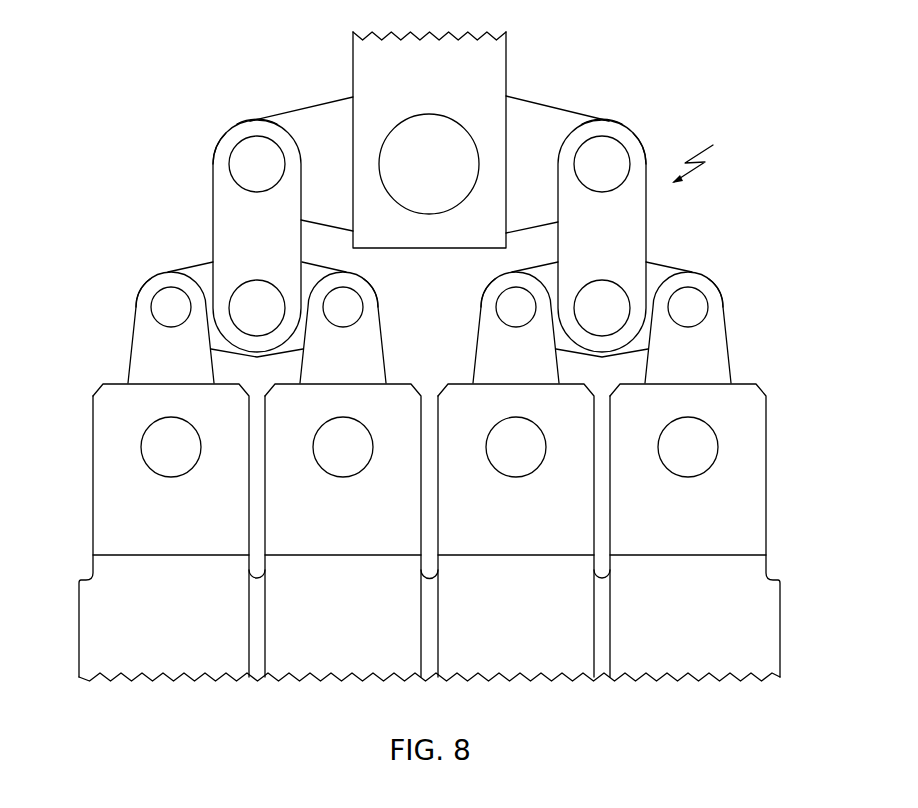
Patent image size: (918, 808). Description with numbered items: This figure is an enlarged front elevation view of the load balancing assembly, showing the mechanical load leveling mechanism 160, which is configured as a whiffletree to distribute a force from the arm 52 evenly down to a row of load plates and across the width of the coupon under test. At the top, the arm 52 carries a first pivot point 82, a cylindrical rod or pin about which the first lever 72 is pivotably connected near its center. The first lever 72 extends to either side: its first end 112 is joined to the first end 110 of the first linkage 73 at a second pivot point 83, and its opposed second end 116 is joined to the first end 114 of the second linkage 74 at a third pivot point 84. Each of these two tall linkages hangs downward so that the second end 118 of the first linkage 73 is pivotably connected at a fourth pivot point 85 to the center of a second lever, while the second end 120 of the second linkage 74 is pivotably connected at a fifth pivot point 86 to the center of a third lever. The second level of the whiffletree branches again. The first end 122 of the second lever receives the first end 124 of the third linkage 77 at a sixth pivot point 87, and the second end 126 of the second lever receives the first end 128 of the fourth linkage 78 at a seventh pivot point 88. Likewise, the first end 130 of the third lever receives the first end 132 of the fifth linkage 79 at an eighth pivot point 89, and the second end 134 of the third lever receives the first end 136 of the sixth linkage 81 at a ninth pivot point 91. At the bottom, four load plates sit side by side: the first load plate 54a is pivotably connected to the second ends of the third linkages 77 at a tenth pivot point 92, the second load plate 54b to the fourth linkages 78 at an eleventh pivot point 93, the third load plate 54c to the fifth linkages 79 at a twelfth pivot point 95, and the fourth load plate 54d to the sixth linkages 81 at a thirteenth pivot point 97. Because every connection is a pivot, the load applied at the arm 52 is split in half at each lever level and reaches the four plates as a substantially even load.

The arm 52 is at (506, 57).
The first pivot point 82 is at (441, 115).
The first lever 72 is at (541, 112).
The first linkage 73 is at (218, 222).
The second linkage 74 is at (638, 222).
The second pivot point 83 is at (258, 192).
The third pivot point 84 is at (601, 192).
The fourth pivot point 85 is at (258, 280).
The fifth pivot point 86 is at (601, 280).
The first end of first linkage 110 is at (214, 149).
The first end of first lever 112 is at (253, 118).
The first end of second linkage 114 is at (645, 149).
The second end of first lever 116 is at (606, 118).
The second end of first linkage 118 is at (253, 357).
The second end of second linkage 120 is at (602, 357).
The first end of second lever 122 is at (169, 272).
The first end of third linkage 124 is at (136, 297).
The second end of second lever 126 is at (345, 272).
The first end of fourth linkage 128 is at (377, 297).
The first end of third lever 130 is at (511, 272).
The first end of fifth linkage 132 is at (480, 298).
The second end of third lever 134 is at (687, 272).
The first end of sixth linkage 136 is at (722, 297).
The third linkage 77 is at (135, 348).
The fourth linkage 78 is at (380, 348).
The fifth linkage 79 is at (484, 348).
The sixth linkage 81 is at (722, 348).
The sixth pivot point 87 is at (172, 327).
The seventh pivot point 88 is at (344, 327).
The eighth pivot point 89 is at (517, 327).
The ninth pivot point 91 is at (689, 327).
The tenth pivot point 92 is at (172, 478).
The eleventh pivot point 93 is at (344, 478).
The twelfth pivot point 95 is at (517, 478).
The thirteenth pivot point 97 is at (690, 478).
The first load plate 54a is at (170, 678).
The second load plate 54b is at (342, 678).
The third load plate 54c is at (515, 678).
The fourth load plate 54d is at (687, 678).
The load leveling mechanism 160 is at (711, 159).